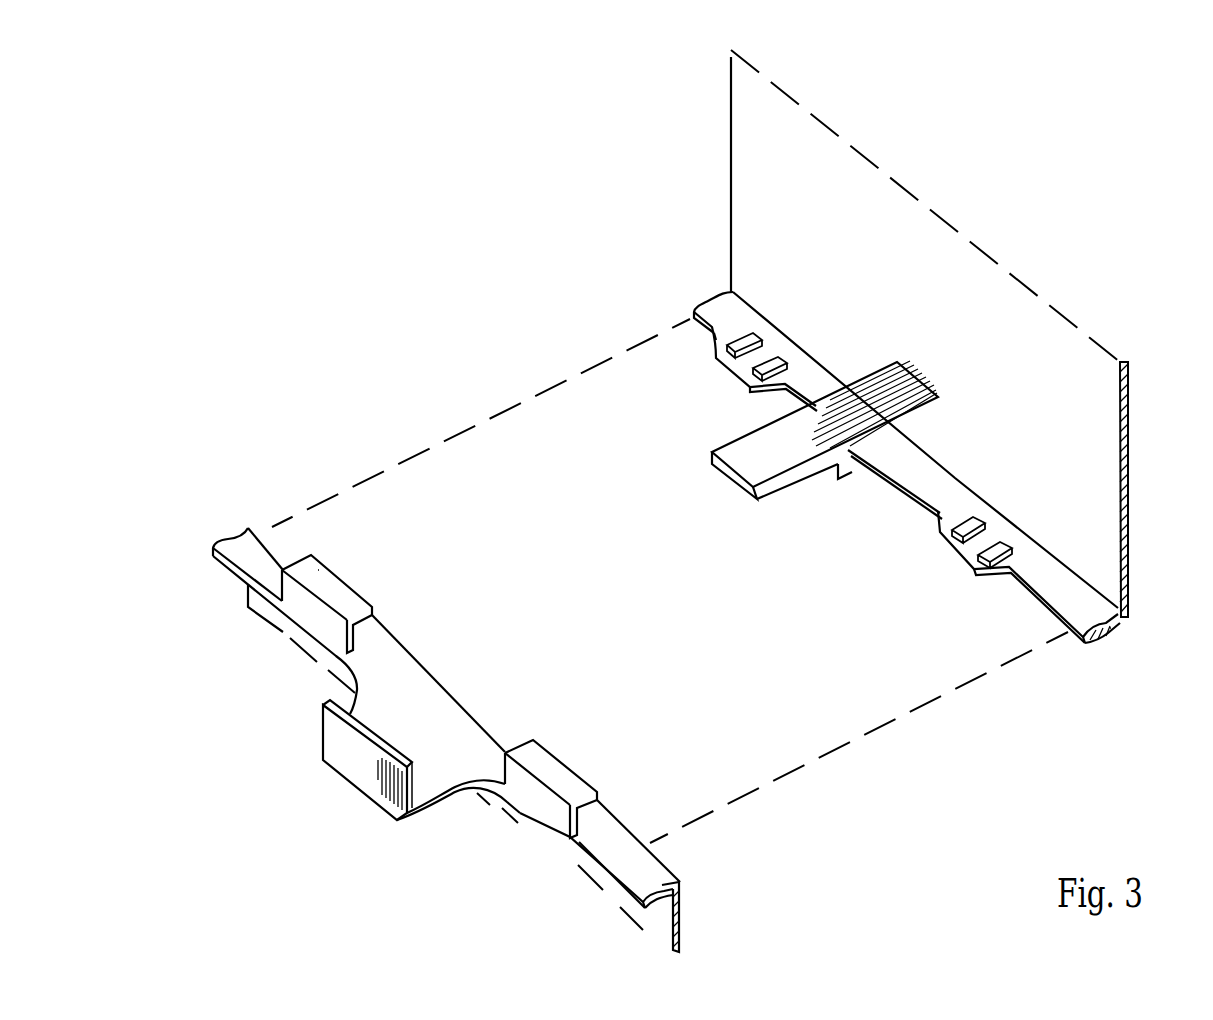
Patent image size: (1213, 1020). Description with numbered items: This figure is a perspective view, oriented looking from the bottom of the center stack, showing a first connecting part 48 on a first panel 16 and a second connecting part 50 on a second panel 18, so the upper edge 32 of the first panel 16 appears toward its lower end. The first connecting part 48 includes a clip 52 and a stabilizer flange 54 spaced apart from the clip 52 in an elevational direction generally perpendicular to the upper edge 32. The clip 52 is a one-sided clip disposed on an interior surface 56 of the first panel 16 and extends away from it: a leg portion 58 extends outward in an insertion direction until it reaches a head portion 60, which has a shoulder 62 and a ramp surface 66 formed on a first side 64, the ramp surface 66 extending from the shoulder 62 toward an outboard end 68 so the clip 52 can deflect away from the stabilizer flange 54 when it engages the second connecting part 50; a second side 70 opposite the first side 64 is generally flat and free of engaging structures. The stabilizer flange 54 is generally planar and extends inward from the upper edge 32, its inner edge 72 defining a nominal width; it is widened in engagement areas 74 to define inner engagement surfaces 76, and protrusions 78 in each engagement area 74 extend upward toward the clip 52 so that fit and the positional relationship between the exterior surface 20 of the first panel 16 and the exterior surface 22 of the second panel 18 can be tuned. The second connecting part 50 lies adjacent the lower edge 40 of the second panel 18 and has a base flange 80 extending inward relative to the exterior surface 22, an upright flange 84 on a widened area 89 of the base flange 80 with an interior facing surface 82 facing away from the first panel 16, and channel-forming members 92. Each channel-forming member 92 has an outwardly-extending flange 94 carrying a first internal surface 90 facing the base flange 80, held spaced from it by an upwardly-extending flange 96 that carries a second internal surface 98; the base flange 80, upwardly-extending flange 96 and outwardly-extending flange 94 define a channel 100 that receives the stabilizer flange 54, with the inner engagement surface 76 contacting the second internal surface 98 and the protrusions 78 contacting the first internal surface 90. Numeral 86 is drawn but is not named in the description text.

The first panel 16 is at (1140, 419).
The second panel 18 is at (703, 932).
The exterior surface of the first panel 20 is at (1129, 482).
The exterior surface of the second panel 22 is at (684, 913).
The upper edge of the first panel 32 is at (1130, 628).
The lower edge of the second panel 40 is at (672, 889).
The first connecting part 48 is at (1054, 681).
The second connecting part 50 is at (385, 862).
The clip 52 is at (928, 375).
The stabilizer flange 54 is at (1110, 633).
The interior surface of the first panel 56 is at (1015, 419).
The leg portion 58 is at (867, 357).
The head portion 60 is at (780, 526).
The shoulder 62 is at (837, 468).
The first side of the clip 64 is at (752, 515).
The ramp surface 66 is at (807, 487).
The outboard end of the clip 68 is at (727, 473).
The second side of the clip 70 is at (720, 436).
The inner edge of the stabilizer flange 72 is at (910, 500).
The engagement area 74 is at (714, 380).
The inner engagement surface 76 is at (714, 366).
The protrusion 78 is at (757, 336).
The base flange 80 is at (606, 870).
The interior facing surface 82 is at (340, 770).
The upright flange 84 is at (320, 722).
The curved transition 86 is at (412, 780).
The widened area of the base flange 89 is at (412, 815).
The first internal surface 90 is at (380, 621).
The channel-forming member 92 is at (360, 585).
The outwardly-extending flange 94 is at (318, 568).
The upwardly-extending flange 96 is at (312, 617).
The second internal surface 98 is at (363, 636).
The channel 100 is at (380, 597).